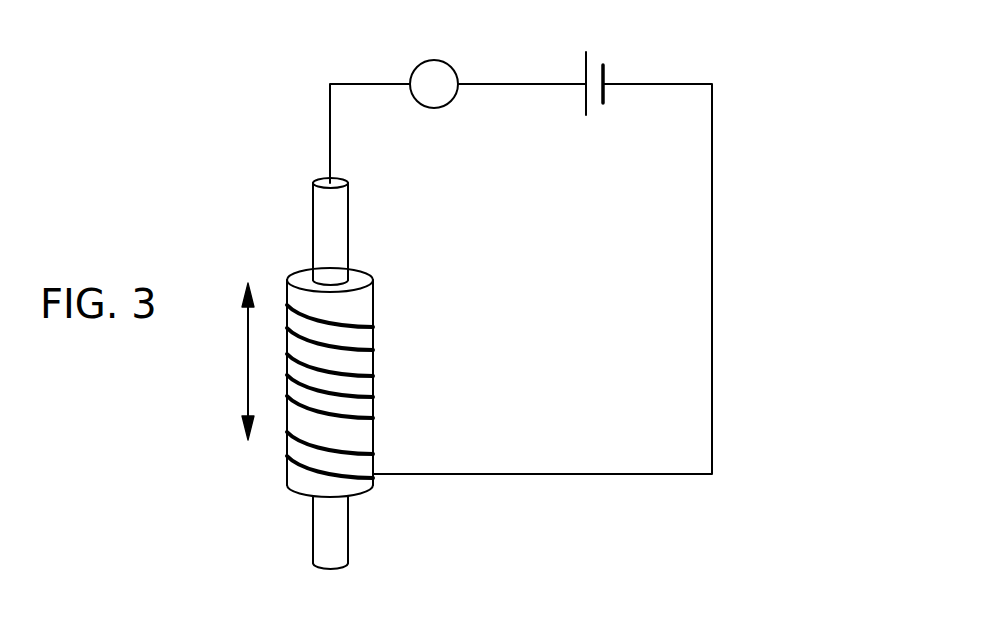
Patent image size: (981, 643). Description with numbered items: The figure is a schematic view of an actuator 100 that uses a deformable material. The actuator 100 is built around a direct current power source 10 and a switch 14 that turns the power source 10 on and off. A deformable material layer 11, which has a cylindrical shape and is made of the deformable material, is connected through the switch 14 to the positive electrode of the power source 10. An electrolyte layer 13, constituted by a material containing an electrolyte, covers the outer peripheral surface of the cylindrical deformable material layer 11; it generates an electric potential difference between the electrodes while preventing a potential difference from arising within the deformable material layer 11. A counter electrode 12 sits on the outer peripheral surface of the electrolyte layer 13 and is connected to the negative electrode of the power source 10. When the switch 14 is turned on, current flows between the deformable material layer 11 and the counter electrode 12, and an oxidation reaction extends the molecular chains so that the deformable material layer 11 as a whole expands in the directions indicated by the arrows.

The actuator 100 is at (241, 48).
The power source 10 is at (616, 65).
The deformable material layer 11 is at (337, 220).
The counter electrode 12 is at (303, 460).
The electrolyte layer 13 is at (373, 310).
The switch 14 is at (437, 60).